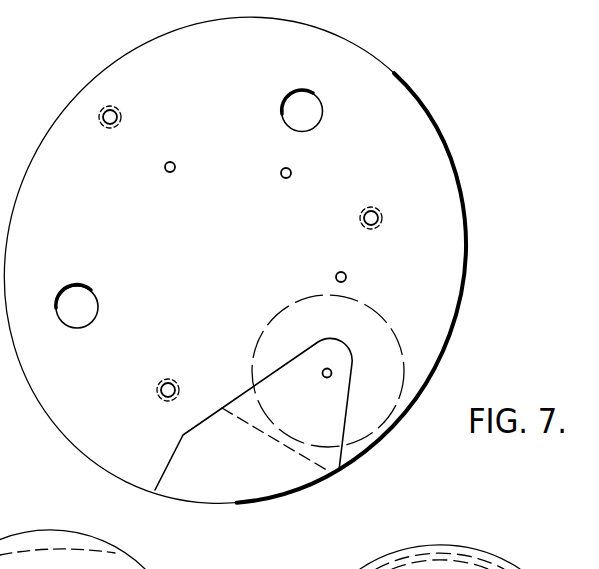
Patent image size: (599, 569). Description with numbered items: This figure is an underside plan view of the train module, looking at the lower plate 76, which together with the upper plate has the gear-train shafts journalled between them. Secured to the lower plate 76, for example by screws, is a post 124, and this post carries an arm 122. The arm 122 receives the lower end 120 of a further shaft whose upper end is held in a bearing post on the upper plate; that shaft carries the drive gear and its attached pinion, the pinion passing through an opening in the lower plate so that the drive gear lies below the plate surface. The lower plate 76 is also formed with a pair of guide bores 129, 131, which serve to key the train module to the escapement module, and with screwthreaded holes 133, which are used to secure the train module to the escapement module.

The lower plate 76 is at (448, 294).
The lower end of shaft 120 is at (324, 378).
The arm 122 is at (313, 443).
The post 124 is at (235, 487).
The guide bore 129 is at (78, 328).
The guide bore 131 is at (316, 126).
The screwthreaded holes 133 is at (119, 120).